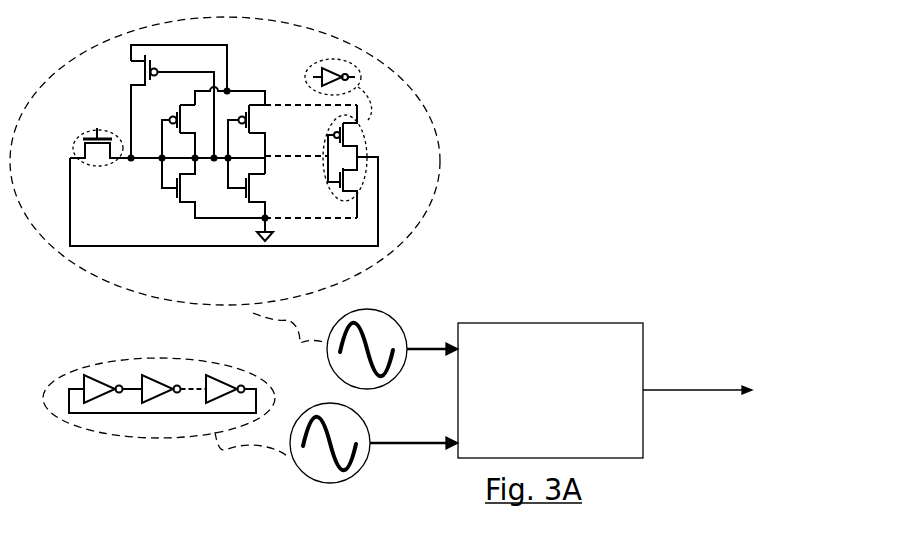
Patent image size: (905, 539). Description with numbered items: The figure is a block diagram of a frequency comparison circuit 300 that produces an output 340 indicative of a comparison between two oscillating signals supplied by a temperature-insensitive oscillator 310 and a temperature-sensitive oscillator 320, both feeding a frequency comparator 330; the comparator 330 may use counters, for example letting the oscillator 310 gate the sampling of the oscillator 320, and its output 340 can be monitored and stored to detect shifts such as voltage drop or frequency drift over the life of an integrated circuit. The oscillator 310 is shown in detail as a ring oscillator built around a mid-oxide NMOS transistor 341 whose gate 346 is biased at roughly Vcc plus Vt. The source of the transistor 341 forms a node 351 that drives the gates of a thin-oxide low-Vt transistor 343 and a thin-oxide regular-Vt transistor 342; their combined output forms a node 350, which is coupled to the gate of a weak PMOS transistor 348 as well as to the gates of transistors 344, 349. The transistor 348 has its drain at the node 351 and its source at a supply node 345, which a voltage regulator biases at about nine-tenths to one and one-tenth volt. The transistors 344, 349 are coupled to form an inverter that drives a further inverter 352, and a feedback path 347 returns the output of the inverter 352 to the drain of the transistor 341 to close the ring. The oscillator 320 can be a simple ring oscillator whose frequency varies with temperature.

The frequency comparison circuit 300 is at (677, 250).
The temperature-insensitive oscillator 310 is at (395, 255).
The temperature-sensitive oscillator 320 is at (300, 475).
The frequency comparator 330 is at (532, 323).
The output 340 is at (675, 388).
The transistor 341 is at (79, 127).
The transistor 342 is at (173, 115).
The transistor 343 is at (178, 199).
The transistor 344 is at (258, 190).
The supply node 345 is at (233, 88).
The gate 346 is at (97, 129).
The feedback path 347 is at (380, 223).
The transistor 348 is at (138, 72).
The transistor 349 is at (258, 122).
The node 350 is at (177, 73).
The node 351 is at (150, 162).
The inverter 352 is at (372, 145).